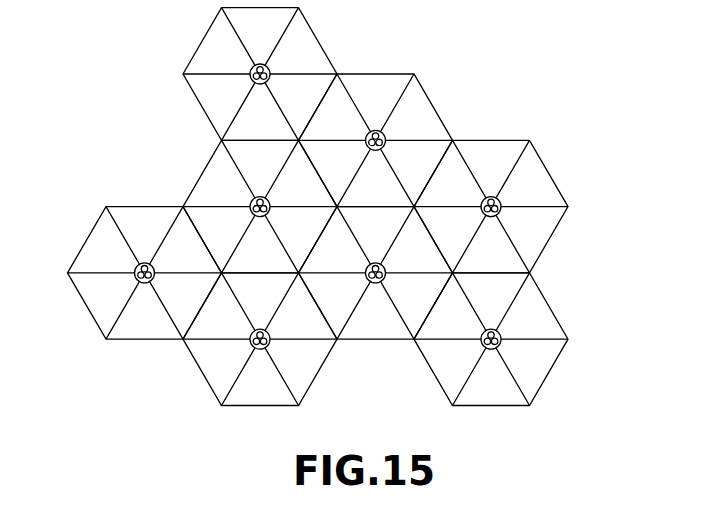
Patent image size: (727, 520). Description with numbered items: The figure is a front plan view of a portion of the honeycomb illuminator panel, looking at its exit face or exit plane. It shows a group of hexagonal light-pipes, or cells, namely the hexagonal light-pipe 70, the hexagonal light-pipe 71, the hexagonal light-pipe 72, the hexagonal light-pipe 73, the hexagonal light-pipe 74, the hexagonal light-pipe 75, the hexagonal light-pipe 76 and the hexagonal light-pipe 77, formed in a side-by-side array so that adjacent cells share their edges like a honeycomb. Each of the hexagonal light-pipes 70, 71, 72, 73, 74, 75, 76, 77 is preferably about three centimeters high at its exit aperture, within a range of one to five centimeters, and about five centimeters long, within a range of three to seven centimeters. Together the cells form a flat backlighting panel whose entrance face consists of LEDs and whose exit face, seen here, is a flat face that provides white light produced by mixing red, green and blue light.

The hexagonal light-pipe 70 is at (223, 40).
The hexagonal light-pipe 71 is at (417, 85).
The hexagonal light-pipe 72 is at (215, 168).
The hexagonal light-pipe 73 is at (493, 153).
The hexagonal light-pipe 74 is at (98, 238).
The hexagonal light-pipe 75 is at (420, 248).
The hexagonal light-pipe 76 is at (213, 365).
The hexagonal light-pipe 77 is at (447, 368).